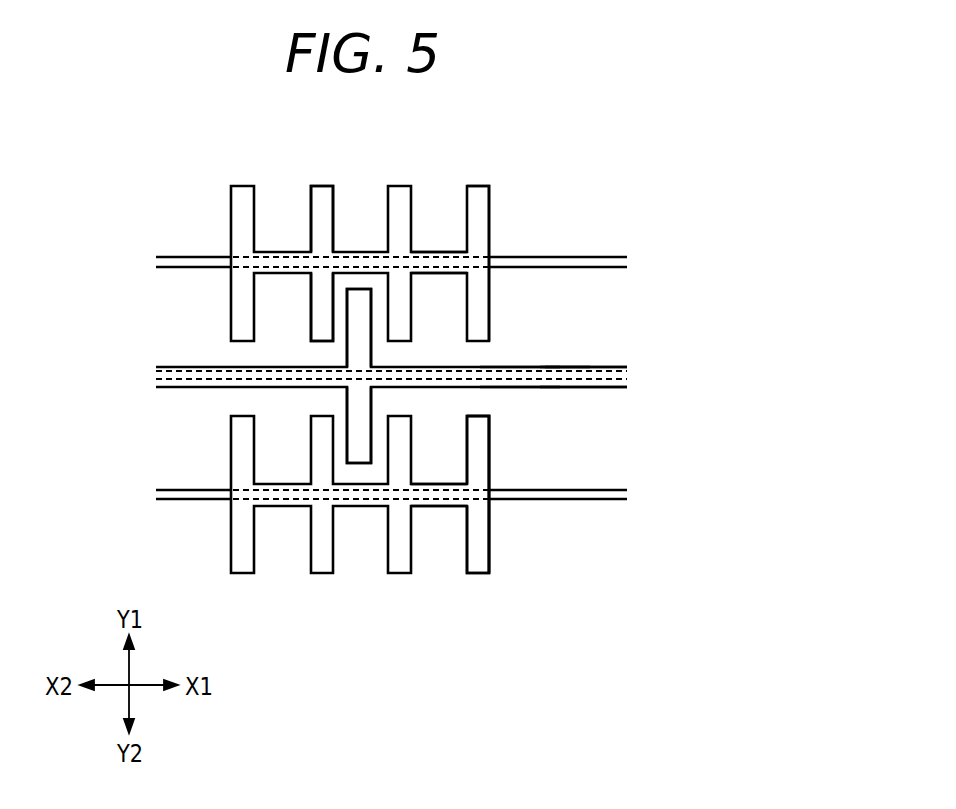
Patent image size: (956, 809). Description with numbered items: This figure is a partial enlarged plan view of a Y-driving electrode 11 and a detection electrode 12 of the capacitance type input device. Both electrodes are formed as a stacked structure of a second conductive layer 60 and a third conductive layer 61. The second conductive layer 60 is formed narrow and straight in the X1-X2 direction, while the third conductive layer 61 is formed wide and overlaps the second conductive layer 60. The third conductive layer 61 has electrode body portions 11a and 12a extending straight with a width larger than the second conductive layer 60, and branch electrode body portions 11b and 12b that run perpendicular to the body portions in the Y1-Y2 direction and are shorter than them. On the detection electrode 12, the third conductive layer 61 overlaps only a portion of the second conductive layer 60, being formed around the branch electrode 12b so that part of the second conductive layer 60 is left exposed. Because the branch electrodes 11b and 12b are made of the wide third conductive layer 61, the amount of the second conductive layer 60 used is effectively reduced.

The Y-driving electrode 11 is at (128, 368).
The electrode body portion 11a is at (520, 370).
The branch electrode body portion 11b is at (363, 352).
The detection electrode 12 is at (128, 257).
The electrode body portion 12a is at (478, 258).
The branch electrode body portion 12b is at (327, 212).
The second conductive layer 60 is at (607, 257).
The third conductive layer 61 is at (482, 212).